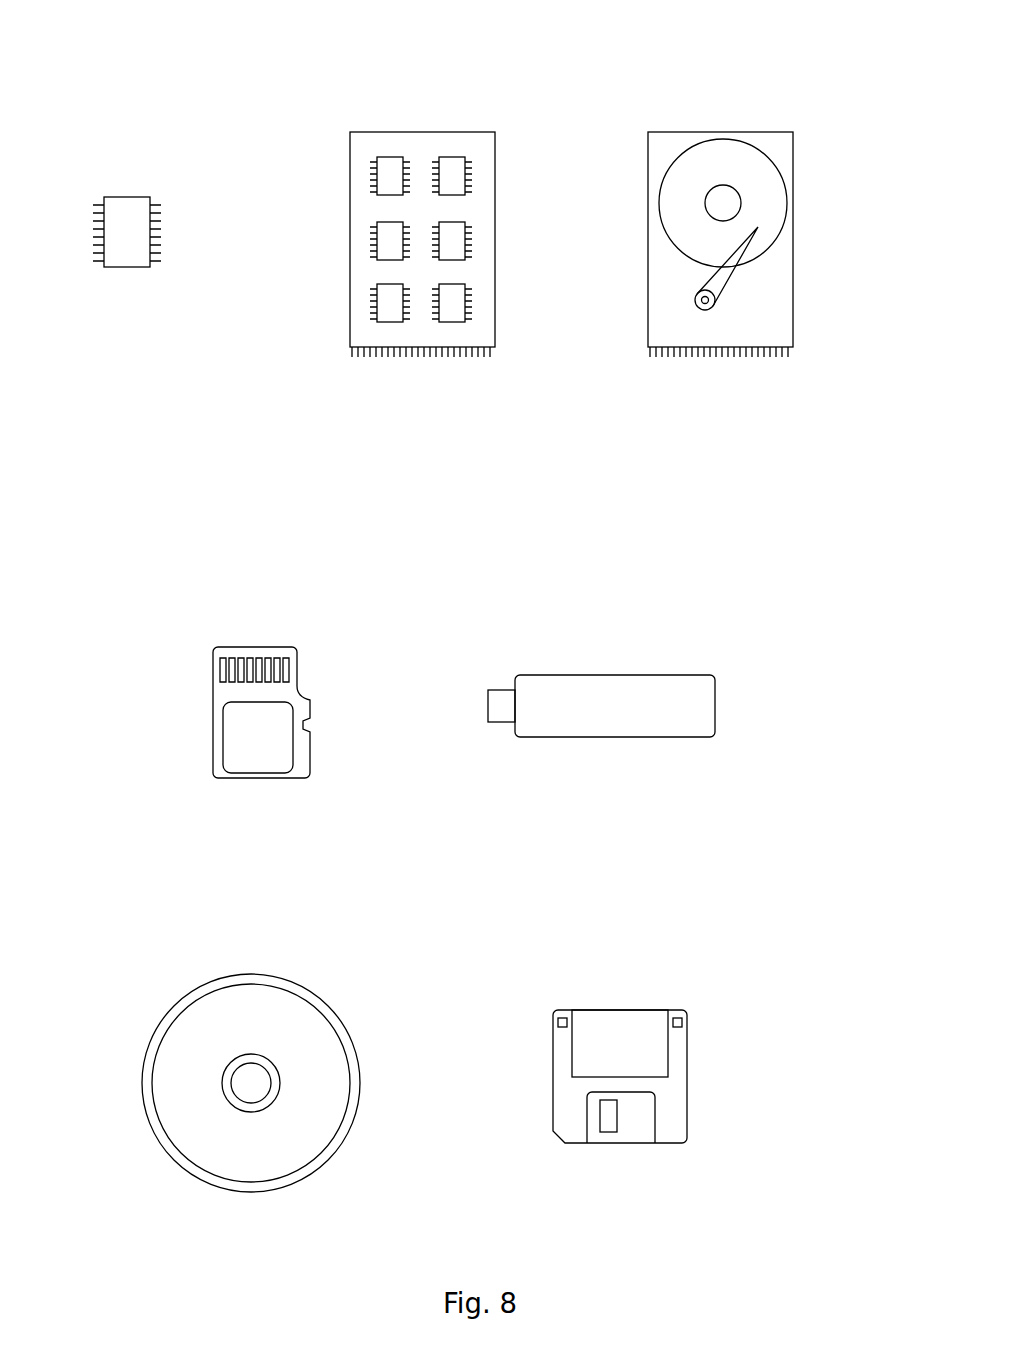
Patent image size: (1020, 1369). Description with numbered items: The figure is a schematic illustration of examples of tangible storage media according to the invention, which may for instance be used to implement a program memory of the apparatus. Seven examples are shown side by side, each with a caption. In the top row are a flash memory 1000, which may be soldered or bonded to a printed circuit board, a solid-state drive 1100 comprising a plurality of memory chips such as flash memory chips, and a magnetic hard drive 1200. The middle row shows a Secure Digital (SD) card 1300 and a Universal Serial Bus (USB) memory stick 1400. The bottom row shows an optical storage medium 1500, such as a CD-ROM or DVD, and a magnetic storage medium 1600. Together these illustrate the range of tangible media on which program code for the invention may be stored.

The flash memory 1000 is at (161, 148).
The solid-state drive 1100 is at (505, 82).
The magnetic hard drive 1200 is at (806, 82).
The Secure Digital (SD) card 1300 is at (308, 603).
The Universal Serial Bus (USB) memory stick 1400 is at (696, 625).
The optical storage medium 1500 is at (348, 957).
The magnetic storage medium 1600 is at (690, 959).